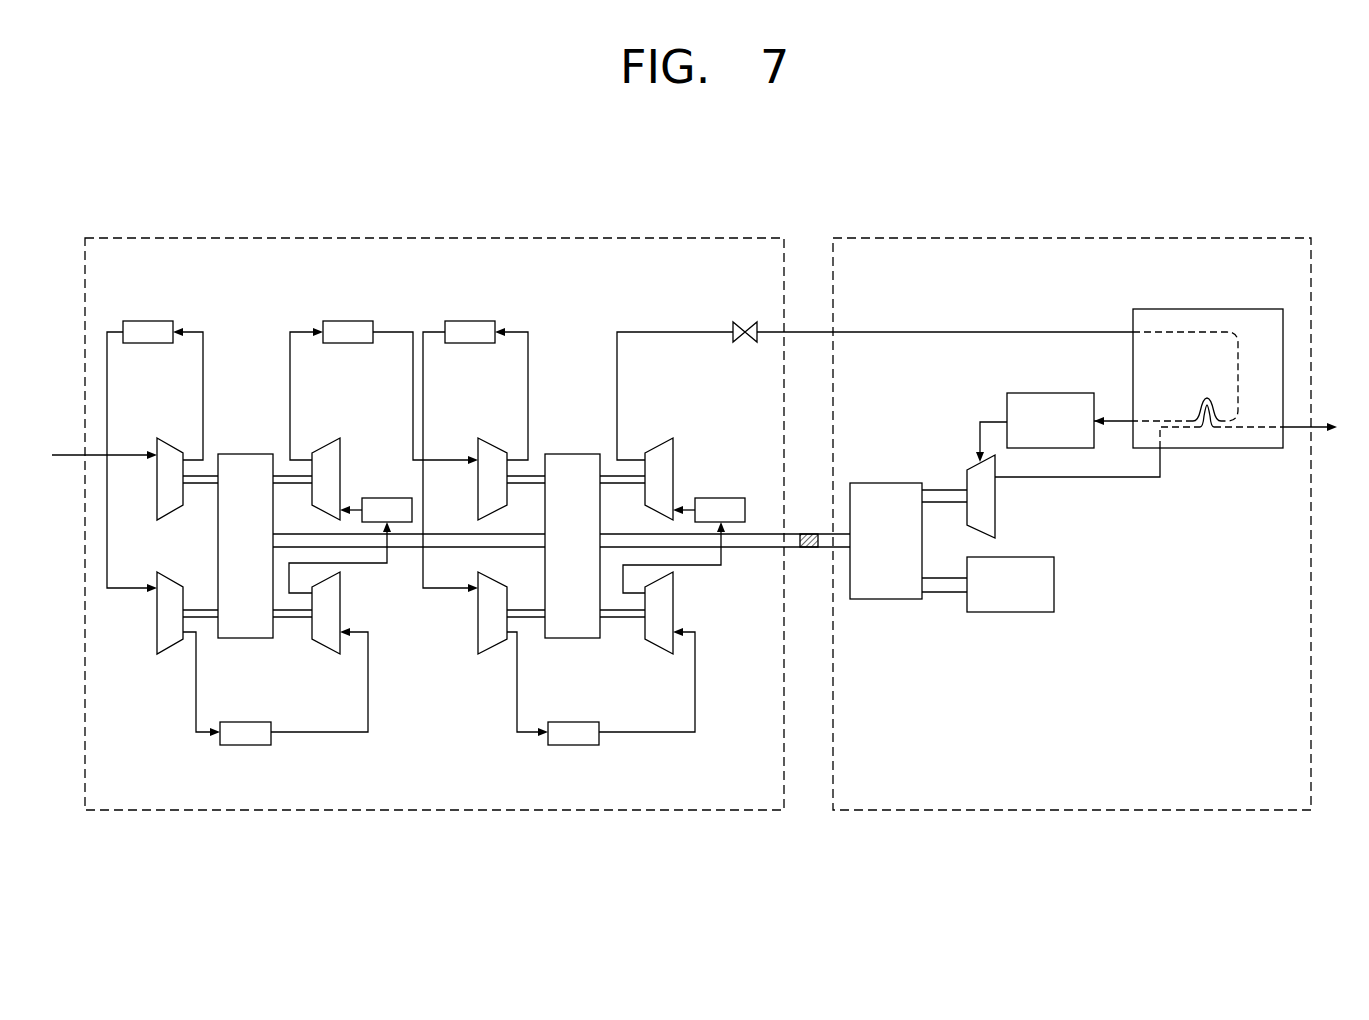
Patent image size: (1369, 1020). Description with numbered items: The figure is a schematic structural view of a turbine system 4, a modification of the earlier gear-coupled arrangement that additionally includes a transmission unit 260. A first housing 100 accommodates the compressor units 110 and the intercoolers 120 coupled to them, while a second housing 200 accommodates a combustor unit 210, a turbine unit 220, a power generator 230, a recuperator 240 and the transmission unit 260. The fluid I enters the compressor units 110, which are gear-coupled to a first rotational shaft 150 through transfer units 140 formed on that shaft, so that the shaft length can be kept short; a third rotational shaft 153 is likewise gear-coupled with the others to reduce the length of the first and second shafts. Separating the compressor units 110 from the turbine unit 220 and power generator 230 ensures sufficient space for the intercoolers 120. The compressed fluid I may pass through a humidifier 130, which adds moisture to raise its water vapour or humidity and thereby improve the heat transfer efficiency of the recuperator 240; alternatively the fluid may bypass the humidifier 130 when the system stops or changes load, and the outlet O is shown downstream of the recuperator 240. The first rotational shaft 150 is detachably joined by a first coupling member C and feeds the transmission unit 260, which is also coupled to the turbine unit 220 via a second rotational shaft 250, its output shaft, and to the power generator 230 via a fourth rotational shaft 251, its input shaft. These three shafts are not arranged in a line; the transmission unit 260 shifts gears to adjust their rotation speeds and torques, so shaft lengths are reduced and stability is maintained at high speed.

The turbine system 4 is at (1214, 148).
The first housing 100 is at (443, 238).
The compressor unit 110 is at (169, 441).
The intercooler 120 is at (151, 321).
The humidifier 130 is at (745, 322).
The transfer unit 140 is at (245, 454).
The first rotational shaft 150 is at (745, 550).
The third rotational shaft 153 is at (627, 486).
The second housing 200 is at (1073, 238).
The combustor unit 210 is at (1050, 393).
The turbine unit 220 is at (995, 512).
The power generator 230 is at (1010, 614).
The recuperator 240 is at (1210, 309).
The second rotational shaft 250 is at (944, 488).
The fourth rotational shaft 251 is at (944, 594).
The transmission unit 260 is at (880, 601).
The first coupling member C is at (808, 550).
The fluid I is at (98, 452).
The outlet O is at (1325, 427).